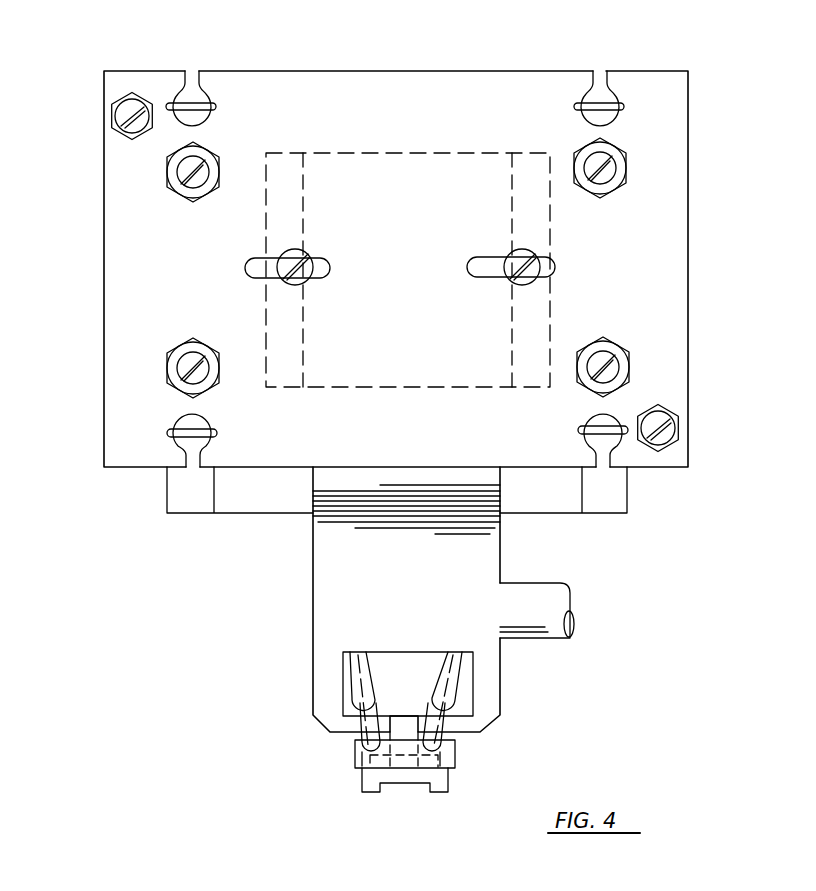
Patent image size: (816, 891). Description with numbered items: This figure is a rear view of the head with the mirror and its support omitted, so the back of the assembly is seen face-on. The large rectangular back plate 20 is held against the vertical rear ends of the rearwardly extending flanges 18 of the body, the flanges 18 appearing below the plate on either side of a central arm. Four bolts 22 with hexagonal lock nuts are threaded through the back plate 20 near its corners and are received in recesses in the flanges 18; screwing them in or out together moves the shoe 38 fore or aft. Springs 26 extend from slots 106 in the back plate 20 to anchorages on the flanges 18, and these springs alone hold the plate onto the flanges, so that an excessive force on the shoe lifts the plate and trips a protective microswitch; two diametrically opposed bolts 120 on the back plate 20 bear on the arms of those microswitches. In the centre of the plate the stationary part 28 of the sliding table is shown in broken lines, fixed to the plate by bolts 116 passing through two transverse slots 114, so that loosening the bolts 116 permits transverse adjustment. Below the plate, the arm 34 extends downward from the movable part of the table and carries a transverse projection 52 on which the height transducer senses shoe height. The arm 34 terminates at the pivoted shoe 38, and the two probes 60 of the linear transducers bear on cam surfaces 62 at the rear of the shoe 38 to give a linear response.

The flanges 18 is at (195, 498).
The back plate 20 is at (390, 85).
The bolts 22 is at (188, 165).
The springs 26 is at (197, 100).
The stationary part 28 is at (487, 151).
The arm 34 is at (326, 573).
The shoe 38 is at (440, 783).
The transverse projection 52 is at (540, 624).
The probes 60 is at (440, 670).
The cam surfaces 62 is at (355, 757).
The slots 106 is at (204, 100).
The transverse slots 114 is at (268, 260).
The bolts 116 is at (300, 277).
The bolts 120 is at (132, 108).